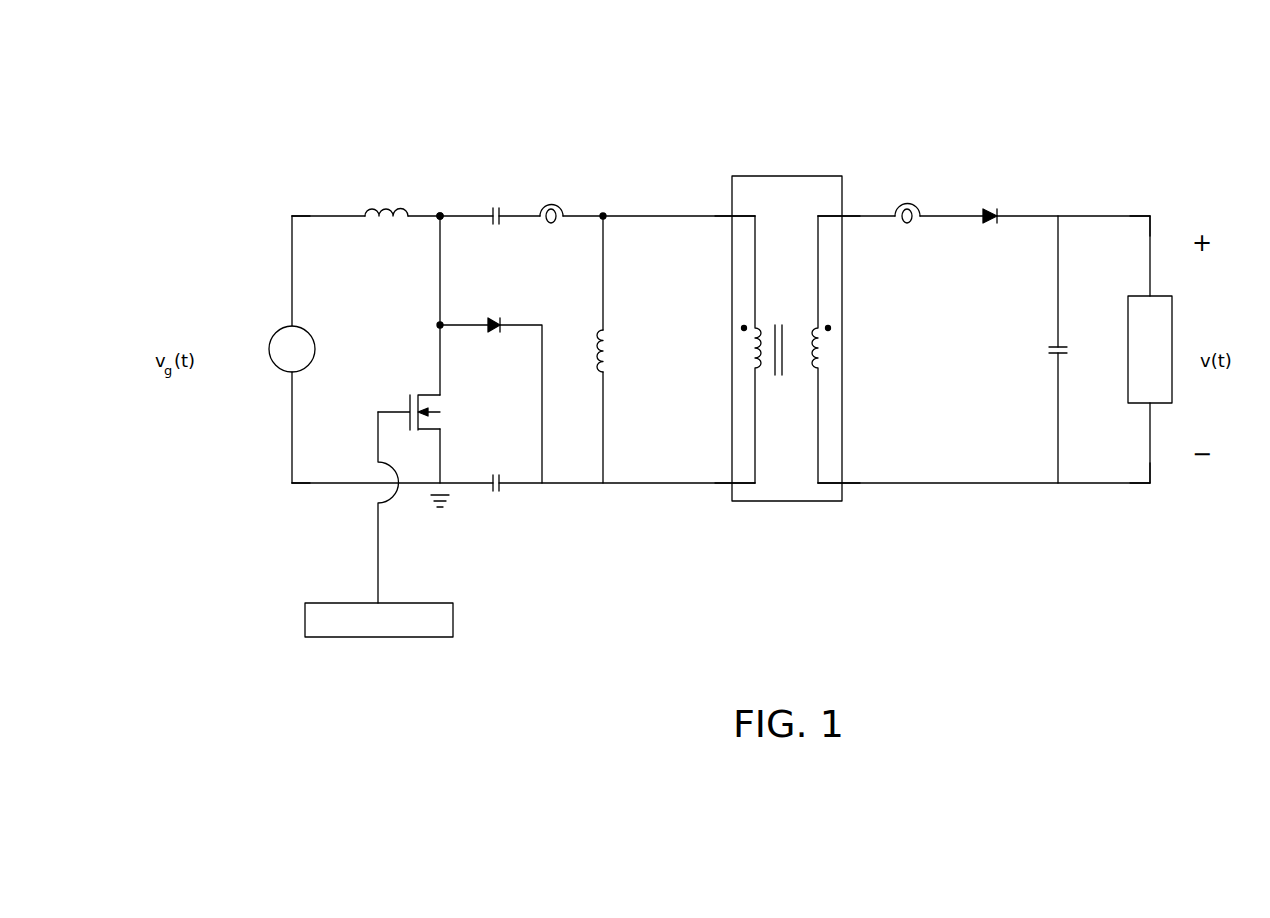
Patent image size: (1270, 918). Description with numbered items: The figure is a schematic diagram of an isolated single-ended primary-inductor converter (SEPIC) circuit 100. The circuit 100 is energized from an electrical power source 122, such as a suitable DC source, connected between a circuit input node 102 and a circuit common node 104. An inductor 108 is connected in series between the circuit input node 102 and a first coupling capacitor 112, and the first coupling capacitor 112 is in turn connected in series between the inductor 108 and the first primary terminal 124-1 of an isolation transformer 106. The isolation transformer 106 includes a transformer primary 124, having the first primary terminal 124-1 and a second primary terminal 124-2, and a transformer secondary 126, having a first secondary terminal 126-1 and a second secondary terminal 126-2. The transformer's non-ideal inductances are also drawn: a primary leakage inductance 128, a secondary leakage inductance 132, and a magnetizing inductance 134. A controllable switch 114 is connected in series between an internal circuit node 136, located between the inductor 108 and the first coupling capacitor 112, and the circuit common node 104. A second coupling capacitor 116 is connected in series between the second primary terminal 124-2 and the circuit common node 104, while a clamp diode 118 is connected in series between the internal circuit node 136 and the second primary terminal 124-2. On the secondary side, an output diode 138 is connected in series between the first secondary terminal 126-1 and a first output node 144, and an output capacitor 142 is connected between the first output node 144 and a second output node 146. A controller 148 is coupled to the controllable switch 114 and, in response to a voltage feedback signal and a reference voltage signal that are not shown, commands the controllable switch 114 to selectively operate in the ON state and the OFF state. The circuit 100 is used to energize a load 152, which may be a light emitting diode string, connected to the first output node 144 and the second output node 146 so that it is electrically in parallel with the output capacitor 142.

The isolated single-ended primary-inductor converter (SEPIC) circuit 100 is at (1141, 138).
The circuit input node 102 is at (292, 216).
The circuit common node 104 is at (292, 483).
The isolation transformer 106 is at (775, 176).
The inductor 108 is at (390, 208).
The first coupling capacitor 112 is at (496, 208).
The controllable switch 114 is at (418, 394).
The second coupling capacitor 116 is at (500, 492).
The clamp diode 118 is at (494, 318).
The electrical power source 122 is at (269, 349).
The transformer primary 124 is at (755, 328).
The first primary terminal 124-1 is at (732, 216).
The second primary terminal 124-2 is at (730, 485).
The transformer secondary 126 is at (812, 375).
The first secondary terminal 126-1 is at (870, 203).
The second secondary terminal 126-2 is at (845, 485).
The primary leakage inductance 128 is at (552, 208).
The secondary leakage inductance 132 is at (910, 224).
The magnetizing inductance 134 is at (603, 330).
The internal circuit node 136 is at (440, 216).
The output diode 138 is at (995, 208).
The output capacitor 142 is at (1048, 347).
The first output node 144 is at (1150, 216).
The second output node 146 is at (1150, 483).
The controller 148 is at (453, 618).
The load 152 is at (1172, 306).